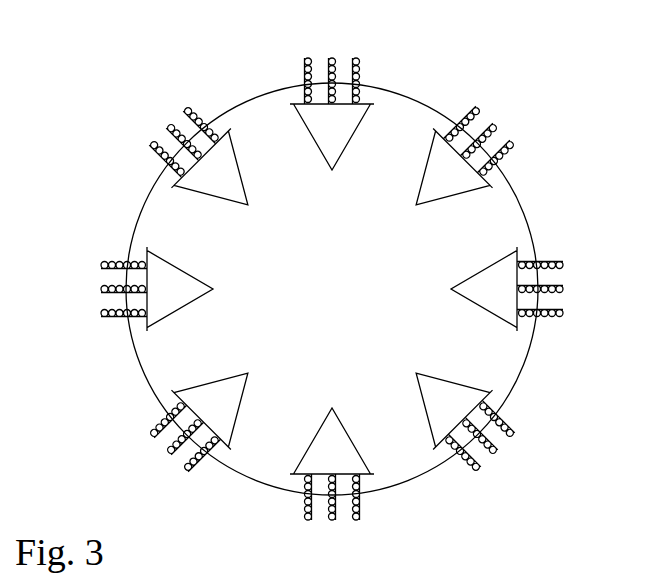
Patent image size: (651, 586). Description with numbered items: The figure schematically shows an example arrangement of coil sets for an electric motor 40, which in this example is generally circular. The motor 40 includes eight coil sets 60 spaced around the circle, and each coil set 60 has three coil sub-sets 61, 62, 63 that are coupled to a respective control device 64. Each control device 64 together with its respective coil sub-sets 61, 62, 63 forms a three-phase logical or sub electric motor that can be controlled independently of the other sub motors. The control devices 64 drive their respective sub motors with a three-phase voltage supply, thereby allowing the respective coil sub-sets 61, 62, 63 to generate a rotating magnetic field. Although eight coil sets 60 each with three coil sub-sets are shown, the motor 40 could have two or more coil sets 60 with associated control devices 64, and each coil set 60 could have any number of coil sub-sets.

The electric motor 40 is at (627, 428).
The coil set 60 is at (329, 285).
The coil sub-set 61 is at (360, 72).
The coil sub-set 62 is at (334, 60).
The coil sub-set 63 is at (307, 82).
The control device 64 is at (337, 140).